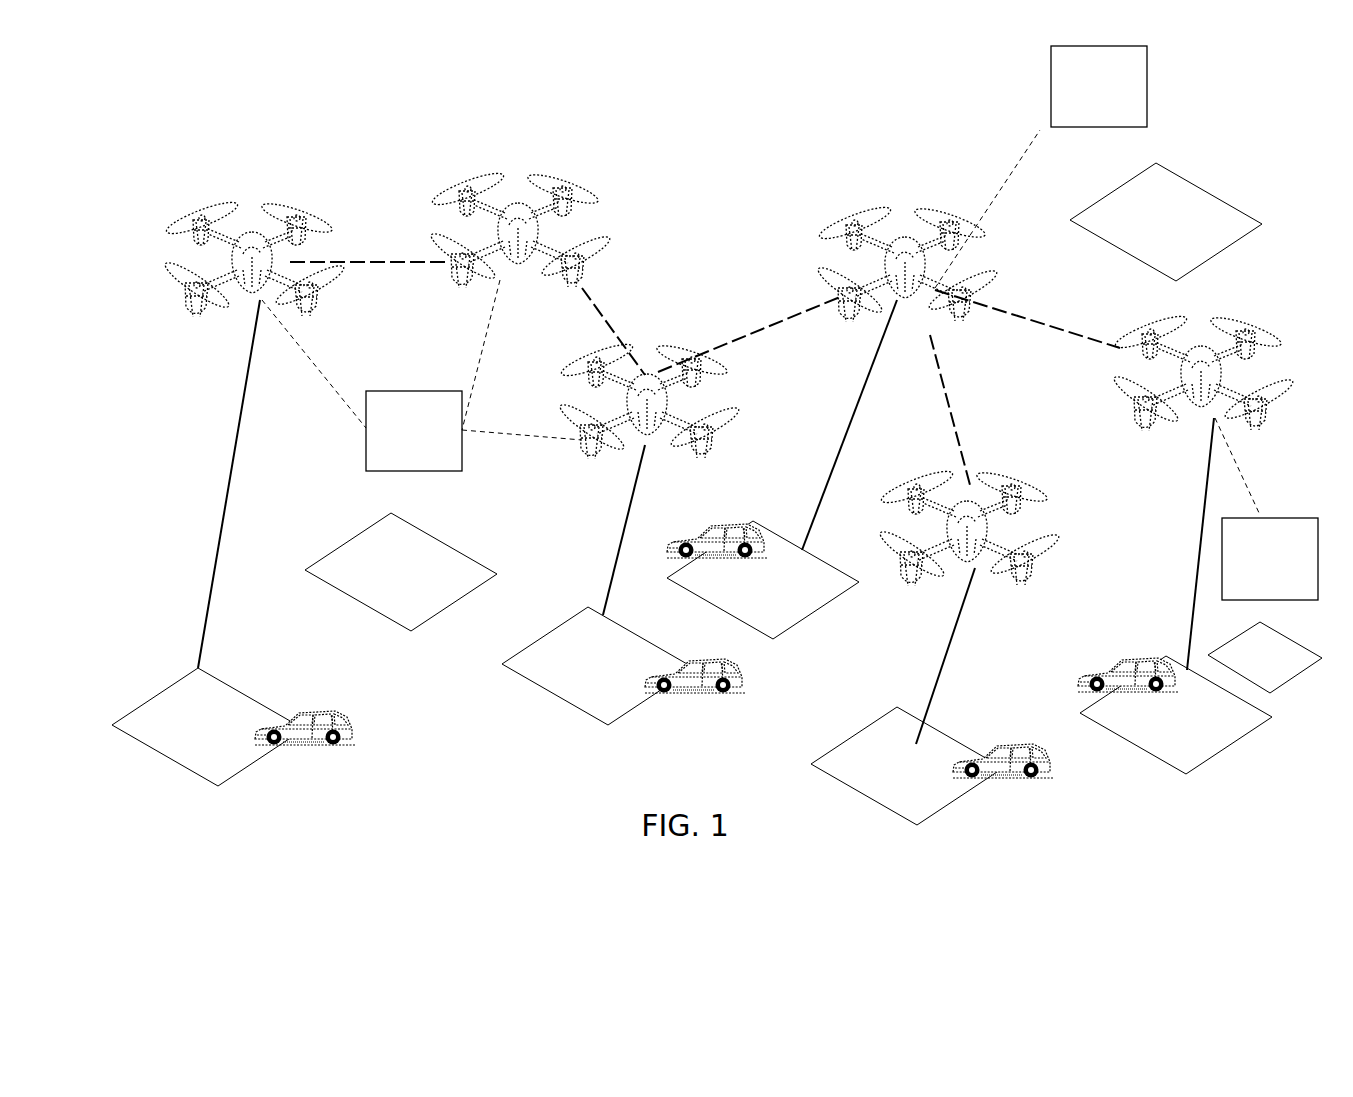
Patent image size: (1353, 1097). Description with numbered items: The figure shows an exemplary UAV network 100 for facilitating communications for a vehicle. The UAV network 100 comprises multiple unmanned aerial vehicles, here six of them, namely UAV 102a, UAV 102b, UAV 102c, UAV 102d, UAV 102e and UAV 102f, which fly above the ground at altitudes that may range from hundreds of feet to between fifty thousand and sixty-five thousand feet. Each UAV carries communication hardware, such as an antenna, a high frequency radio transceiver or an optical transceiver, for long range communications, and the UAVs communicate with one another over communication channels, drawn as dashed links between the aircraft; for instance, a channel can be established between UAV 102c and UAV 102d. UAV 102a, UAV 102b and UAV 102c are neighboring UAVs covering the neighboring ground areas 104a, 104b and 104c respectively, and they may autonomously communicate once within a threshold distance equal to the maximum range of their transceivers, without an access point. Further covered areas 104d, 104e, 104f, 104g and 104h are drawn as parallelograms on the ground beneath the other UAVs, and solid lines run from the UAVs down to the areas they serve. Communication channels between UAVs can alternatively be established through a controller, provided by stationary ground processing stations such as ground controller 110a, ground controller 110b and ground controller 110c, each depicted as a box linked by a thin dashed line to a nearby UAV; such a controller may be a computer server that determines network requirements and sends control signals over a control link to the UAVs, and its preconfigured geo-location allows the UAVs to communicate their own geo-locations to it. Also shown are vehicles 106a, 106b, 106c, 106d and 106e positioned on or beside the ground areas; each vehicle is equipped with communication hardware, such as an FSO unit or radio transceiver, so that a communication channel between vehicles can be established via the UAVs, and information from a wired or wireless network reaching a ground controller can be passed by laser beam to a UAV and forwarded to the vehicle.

The UAV network 100 is at (1080, 778).
The UAV 102a is at (251, 224).
The UAV 102b is at (600, 242).
The UAV 102c is at (728, 406).
The UAV 102d is at (963, 230).
The UAV 102e is at (1030, 490).
The UAV 102f is at (1270, 333).
The area 104a is at (208, 727).
The area 104b is at (401, 572).
The area 104c is at (598, 666).
The area 104d is at (763, 580).
The area 104e is at (907, 766).
The area 104f is at (1176, 715).
The area 104g is at (1265, 657).
The area 104h is at (1166, 222).
The vehicle 106a is at (350, 712).
The vehicle 106b is at (742, 690).
The vehicle 106c is at (724, 521).
The vehicle 106d is at (990, 755).
The vehicle 106e is at (1111, 661).
The ground controller 110a is at (410, 391).
The ground controller 110b is at (1267, 518).
The ground controller 110c is at (1148, 87).